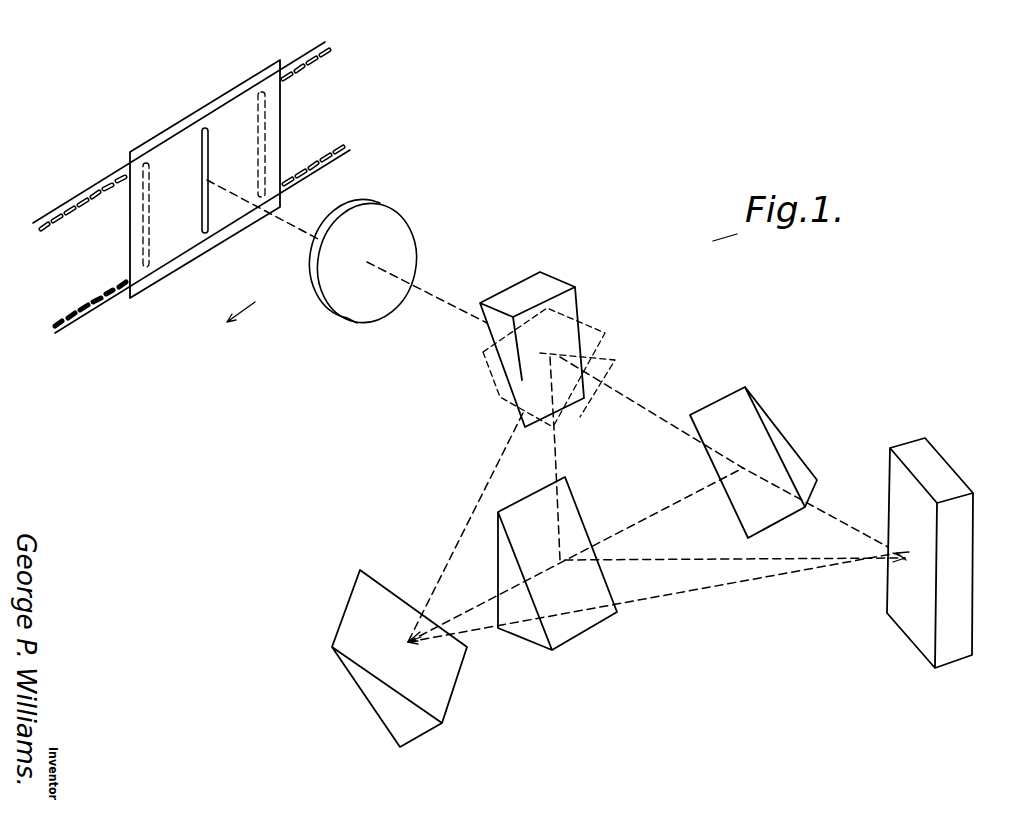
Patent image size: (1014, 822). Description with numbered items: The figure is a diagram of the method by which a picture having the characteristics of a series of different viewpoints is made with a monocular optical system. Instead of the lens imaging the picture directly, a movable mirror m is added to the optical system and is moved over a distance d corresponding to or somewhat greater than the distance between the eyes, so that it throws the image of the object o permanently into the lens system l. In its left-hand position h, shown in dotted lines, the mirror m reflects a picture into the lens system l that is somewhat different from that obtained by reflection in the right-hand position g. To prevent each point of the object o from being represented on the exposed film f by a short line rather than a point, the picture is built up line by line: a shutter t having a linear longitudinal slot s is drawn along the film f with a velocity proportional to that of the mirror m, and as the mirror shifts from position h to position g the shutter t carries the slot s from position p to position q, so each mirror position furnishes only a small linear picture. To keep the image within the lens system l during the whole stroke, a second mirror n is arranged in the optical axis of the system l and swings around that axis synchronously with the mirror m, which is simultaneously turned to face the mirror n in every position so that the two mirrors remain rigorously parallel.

The film f is at (179, 187).
The shutter t is at (193, 113).
The linear longitudinal slot s is at (207, 229).
The slot position q is at (148, 265).
The slot position p is at (265, 147).
The lens system l is at (407, 223).
The second mirror n is at (573, 298).
The left-hand mirror position h is at (396, 637).
The distance d is at (468, 612).
The movable mirror m is at (593, 625).
The right-hand mirror position g is at (713, 366).
The object o is at (930, 552).